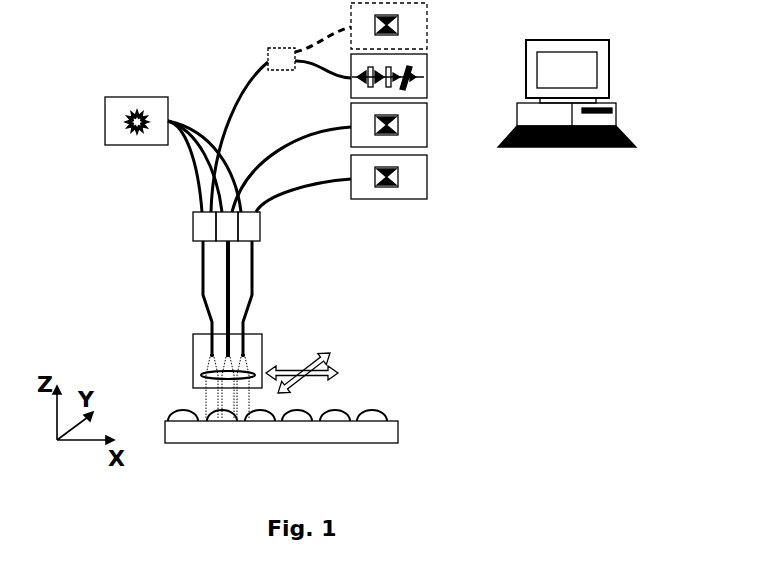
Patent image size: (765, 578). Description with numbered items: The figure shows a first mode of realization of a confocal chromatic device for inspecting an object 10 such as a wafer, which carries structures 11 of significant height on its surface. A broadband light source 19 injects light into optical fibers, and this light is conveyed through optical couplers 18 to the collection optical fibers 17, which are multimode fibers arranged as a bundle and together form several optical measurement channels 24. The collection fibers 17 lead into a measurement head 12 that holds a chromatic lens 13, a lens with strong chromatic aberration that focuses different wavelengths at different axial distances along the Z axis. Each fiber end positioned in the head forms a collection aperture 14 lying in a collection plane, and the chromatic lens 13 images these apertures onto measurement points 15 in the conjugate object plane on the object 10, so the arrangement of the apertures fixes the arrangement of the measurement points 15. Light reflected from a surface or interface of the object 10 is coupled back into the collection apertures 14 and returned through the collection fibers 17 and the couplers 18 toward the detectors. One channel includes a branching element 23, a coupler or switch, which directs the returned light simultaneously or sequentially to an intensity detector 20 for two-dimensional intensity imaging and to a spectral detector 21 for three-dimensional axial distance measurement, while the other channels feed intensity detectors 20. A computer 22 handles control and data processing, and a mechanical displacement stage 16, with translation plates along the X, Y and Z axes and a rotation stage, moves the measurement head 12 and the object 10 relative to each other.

The object 10 is at (398, 432).
The structures 11 is at (388, 413).
The measurement head 12 is at (193, 362).
The chromatic lens 13 is at (200, 375).
The collection aperture 14 is at (244, 357).
The measurement point 15 is at (243, 423).
The mechanical displacement stage 16 is at (330, 358).
The collection optical fiber 17 is at (208, 322).
The optical coupler 18 is at (193, 226).
The broadband light source 19 is at (104, 121).
The intensity detector 20 is at (427, 36).
The spectral detector 21 is at (427, 88).
The computer 22 is at (609, 70).
The branching element 23 is at (282, 48).
The optical measurement channel 24 is at (256, 309).